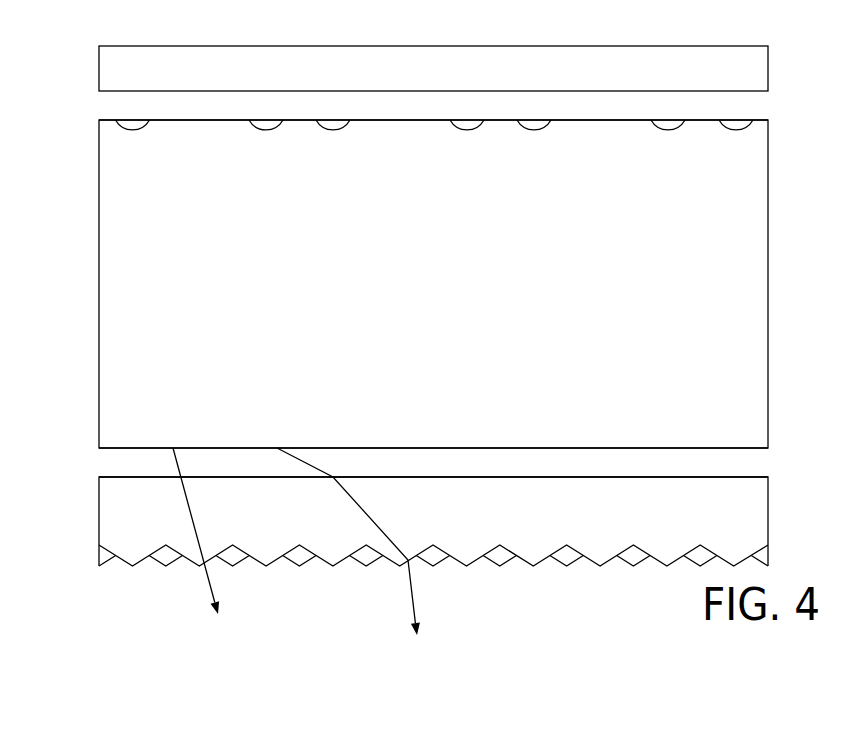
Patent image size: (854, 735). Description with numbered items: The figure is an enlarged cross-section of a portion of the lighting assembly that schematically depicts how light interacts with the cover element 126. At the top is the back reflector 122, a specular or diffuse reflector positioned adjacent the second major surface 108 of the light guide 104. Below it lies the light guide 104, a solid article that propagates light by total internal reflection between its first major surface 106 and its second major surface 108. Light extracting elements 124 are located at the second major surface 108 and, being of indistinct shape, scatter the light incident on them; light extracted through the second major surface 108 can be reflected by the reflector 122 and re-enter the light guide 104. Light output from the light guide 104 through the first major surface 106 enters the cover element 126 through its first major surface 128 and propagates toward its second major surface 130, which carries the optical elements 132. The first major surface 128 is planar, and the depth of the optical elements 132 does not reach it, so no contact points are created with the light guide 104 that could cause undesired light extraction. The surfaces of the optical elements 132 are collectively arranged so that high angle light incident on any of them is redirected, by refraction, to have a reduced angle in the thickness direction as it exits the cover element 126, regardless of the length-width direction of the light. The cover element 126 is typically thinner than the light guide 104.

The light guide 104 is at (135, 212).
The first major surface 106 is at (247, 448).
The second major surface 108 is at (695, 122).
The back reflector 122 is at (138, 70).
The light extracting elements 124 is at (259, 128).
The cover element 126 is at (138, 503).
The first major surface 128 is at (585, 477).
The second major surface 130 is at (75, 558).
The optical elements 132 is at (335, 552).